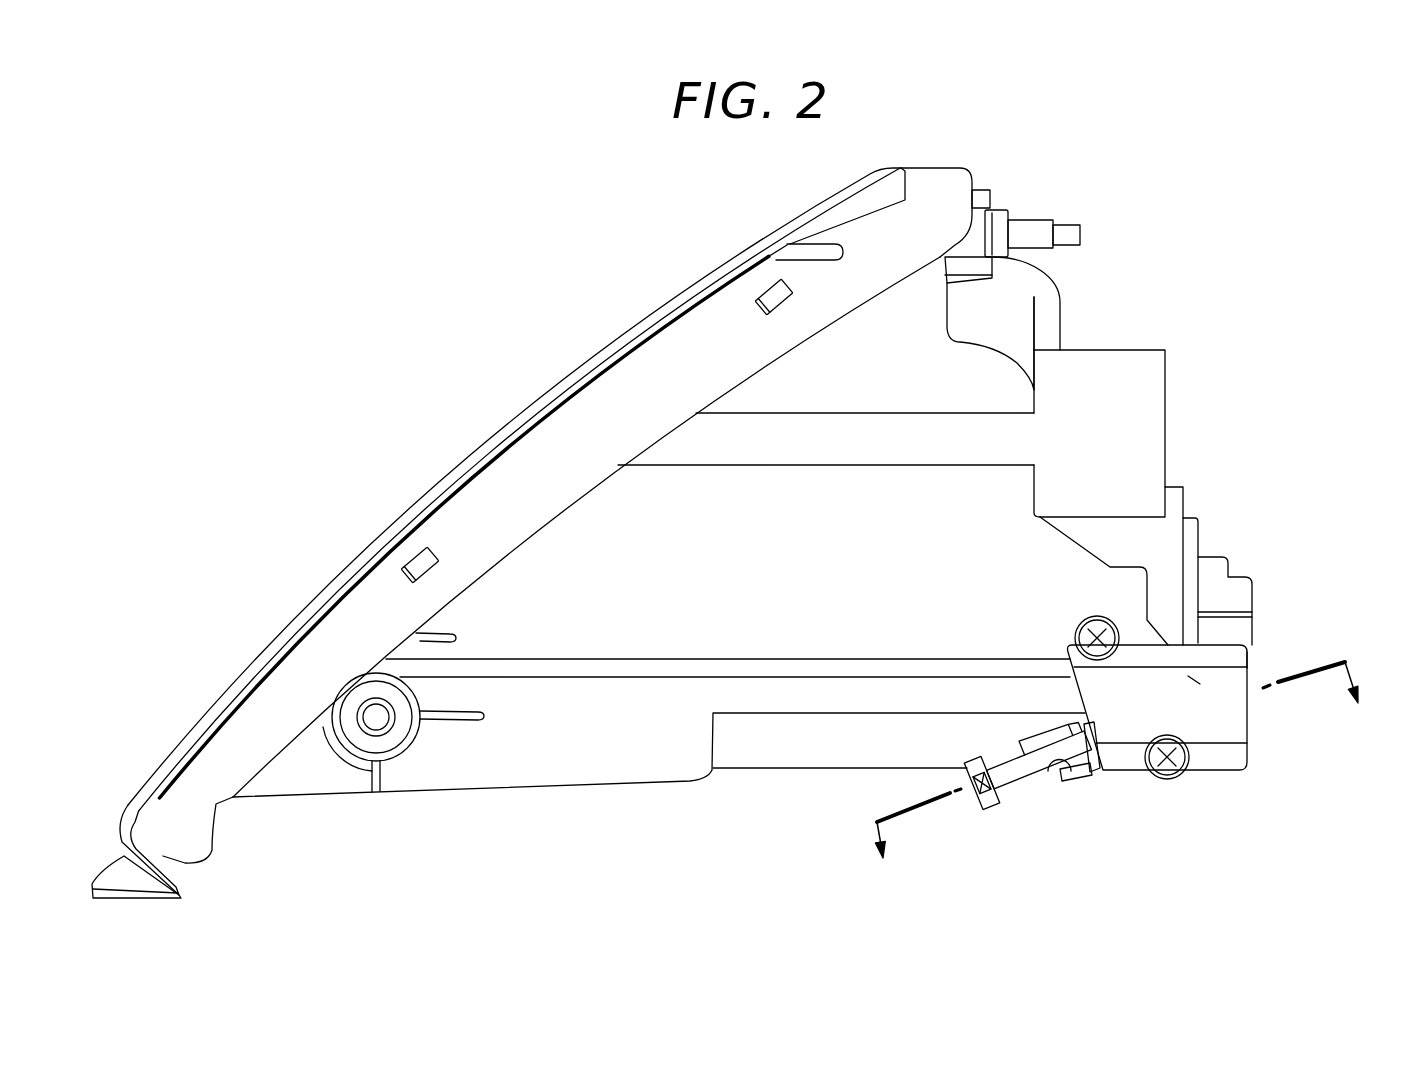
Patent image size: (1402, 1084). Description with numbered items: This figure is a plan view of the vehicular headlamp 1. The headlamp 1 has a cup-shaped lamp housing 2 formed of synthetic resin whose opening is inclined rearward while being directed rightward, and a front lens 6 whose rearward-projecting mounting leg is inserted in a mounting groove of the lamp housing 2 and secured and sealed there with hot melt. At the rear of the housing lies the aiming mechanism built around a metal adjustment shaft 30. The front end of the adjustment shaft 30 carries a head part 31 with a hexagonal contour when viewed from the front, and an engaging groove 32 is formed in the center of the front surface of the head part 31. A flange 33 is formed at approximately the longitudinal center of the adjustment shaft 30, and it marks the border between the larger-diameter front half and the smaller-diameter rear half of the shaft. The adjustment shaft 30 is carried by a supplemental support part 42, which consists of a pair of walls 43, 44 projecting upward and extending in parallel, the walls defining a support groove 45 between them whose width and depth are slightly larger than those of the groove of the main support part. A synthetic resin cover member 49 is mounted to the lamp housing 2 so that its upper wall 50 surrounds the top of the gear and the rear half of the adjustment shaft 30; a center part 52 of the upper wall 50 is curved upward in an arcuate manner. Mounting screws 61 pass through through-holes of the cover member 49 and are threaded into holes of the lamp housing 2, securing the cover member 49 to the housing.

The headlamp 1 is at (537, 349).
The lamp housing 2 is at (598, 758).
The front lens 6 is at (280, 625).
The adjustment shaft 30 is at (1013, 772).
The head part 31 is at (973, 795).
The engaging groove 32 is at (973, 789).
The flange 33 is at (1097, 771).
The supplemental support part 42 is at (1002, 587).
The wall 43 is at (1027, 740).
The wall 44 is at (1070, 727).
The support groove 45 is at (1047, 768).
The cover member 49 is at (1247, 660).
The upper wall 50 is at (1212, 723).
The center part 52 is at (1193, 680).
The mounting screws 61 is at (1090, 617).